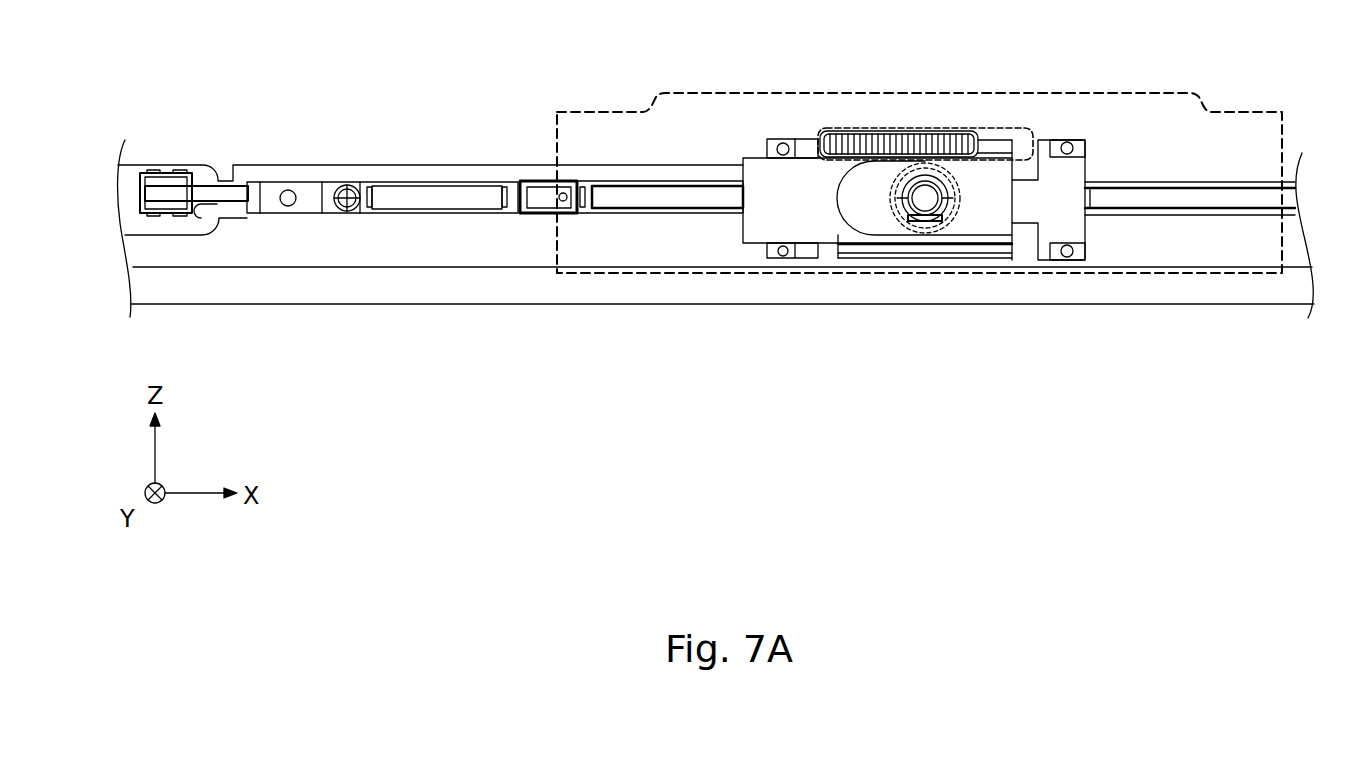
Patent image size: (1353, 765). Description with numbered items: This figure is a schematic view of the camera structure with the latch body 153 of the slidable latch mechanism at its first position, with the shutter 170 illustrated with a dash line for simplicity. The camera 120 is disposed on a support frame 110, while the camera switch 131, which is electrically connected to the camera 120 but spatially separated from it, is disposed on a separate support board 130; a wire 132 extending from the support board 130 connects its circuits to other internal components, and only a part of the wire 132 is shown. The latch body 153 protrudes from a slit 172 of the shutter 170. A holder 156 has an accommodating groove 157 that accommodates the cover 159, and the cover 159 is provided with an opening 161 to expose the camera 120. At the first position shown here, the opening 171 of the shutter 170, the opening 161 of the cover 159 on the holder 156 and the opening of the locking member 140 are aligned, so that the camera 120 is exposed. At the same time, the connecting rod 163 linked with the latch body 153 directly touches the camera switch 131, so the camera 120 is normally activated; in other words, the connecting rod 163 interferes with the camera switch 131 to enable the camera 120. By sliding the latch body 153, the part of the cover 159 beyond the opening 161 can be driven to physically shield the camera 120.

The support frame 110 is at (516, 186).
The camera 120 is at (962, 222).
The support board 130 is at (127, 178).
The camera switch 131 is at (168, 172).
The wire 132 is at (323, 290).
The locking member 140 is at (1076, 168).
The latch body 153 is at (877, 130).
The holder 156 is at (757, 166).
The accommodating groove 157 is at (843, 223).
The cover 159 is at (878, 238).
The opening 161 is at (912, 227).
The connecting rod 163 is at (302, 181).
The shutter 170 is at (692, 93).
The opening 171 is at (967, 201).
The slit 172 is at (1027, 129).